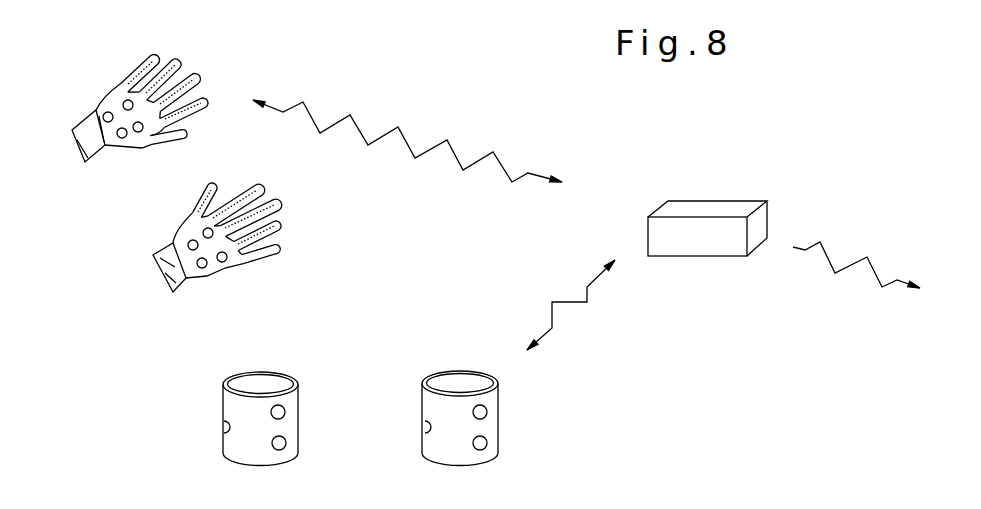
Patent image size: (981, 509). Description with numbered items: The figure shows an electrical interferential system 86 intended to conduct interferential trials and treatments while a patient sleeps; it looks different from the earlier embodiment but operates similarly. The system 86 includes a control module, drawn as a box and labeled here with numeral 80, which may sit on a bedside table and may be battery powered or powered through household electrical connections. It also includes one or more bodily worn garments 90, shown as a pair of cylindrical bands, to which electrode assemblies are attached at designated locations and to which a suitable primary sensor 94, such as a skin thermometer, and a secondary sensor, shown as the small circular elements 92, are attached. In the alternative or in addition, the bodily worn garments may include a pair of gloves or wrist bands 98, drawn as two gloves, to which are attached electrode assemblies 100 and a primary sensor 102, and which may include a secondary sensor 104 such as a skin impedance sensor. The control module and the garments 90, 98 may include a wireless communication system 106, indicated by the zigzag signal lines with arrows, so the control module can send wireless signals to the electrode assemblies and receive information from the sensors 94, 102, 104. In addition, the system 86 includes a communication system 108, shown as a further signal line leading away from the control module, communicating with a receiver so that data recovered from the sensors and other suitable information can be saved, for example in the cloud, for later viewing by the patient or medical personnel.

The base station / control unit 80 is at (858, 143).
The electrical interferential system 86 is at (413, 105).
The bodily worn garment 90 is at (252, 463).
The sensor 92 is at (223, 433).
The primary sensor 94 is at (286, 412).
The gloves or wrist bands 98 is at (113, 90).
The electrode assemblies 100 is at (97, 112).
The primary sensor 102 is at (188, 228).
The secondary sensor 104 is at (140, 132).
The wireless communication system 106 is at (484, 146).
The communication system 108 is at (872, 262).